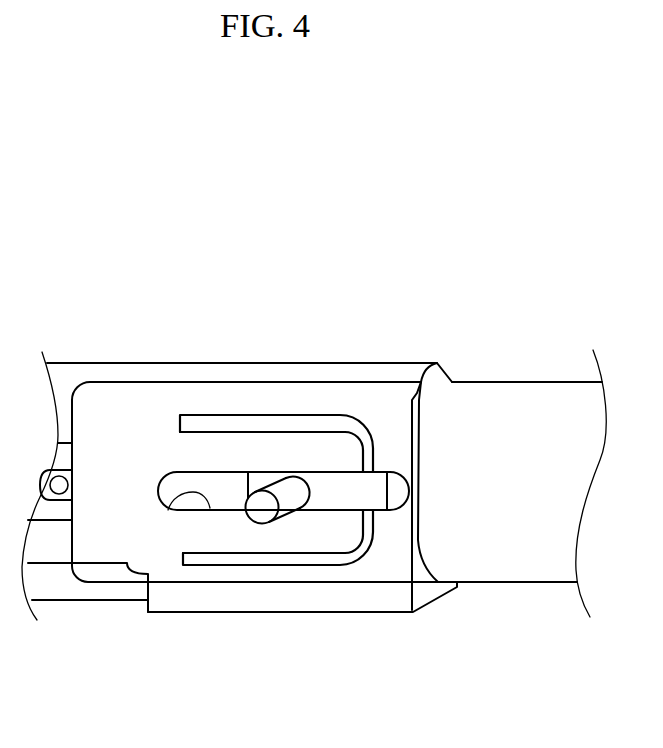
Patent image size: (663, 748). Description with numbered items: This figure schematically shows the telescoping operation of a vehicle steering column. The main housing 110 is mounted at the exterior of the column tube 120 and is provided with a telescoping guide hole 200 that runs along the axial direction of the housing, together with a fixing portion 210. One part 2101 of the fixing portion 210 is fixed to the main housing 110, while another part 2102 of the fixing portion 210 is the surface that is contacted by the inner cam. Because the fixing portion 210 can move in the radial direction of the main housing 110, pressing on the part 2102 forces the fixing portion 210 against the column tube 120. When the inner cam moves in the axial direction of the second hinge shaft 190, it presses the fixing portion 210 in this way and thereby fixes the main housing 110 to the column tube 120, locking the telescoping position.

The main housing 110 is at (254, 371).
The column tube 120 is at (512, 567).
The second hinge shaft 190 is at (266, 523).
The telescoping guide hole 200 is at (168, 512).
The fixing portion 210 is at (358, 233).
The part of the fixing portion 2101 is at (177, 448).
The part of the fixing portion 2102 is at (325, 447).